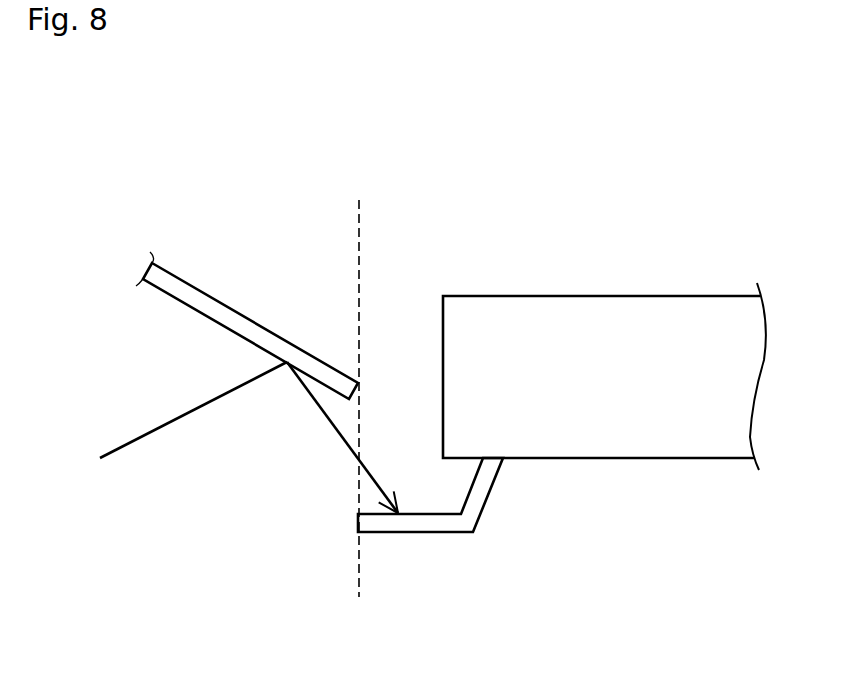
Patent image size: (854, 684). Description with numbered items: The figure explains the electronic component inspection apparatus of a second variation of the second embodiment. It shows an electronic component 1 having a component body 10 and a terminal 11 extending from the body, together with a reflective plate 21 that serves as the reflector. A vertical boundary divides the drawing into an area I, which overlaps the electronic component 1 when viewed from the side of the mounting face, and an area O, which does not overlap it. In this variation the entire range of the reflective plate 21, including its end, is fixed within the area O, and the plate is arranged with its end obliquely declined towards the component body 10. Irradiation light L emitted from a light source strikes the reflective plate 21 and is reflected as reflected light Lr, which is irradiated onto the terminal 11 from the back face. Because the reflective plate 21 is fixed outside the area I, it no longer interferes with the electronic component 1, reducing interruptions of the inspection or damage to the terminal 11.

The electronic component 1 is at (430, 298).
The component body 10 is at (604, 293).
The terminal 11 is at (410, 535).
The reflective plate 21 is at (273, 332).
The irradiation light L is at (197, 407).
The reflected light Lr is at (337, 430).
The non-overlapping area O is at (273, 164).
The overlapping area I is at (499, 164).